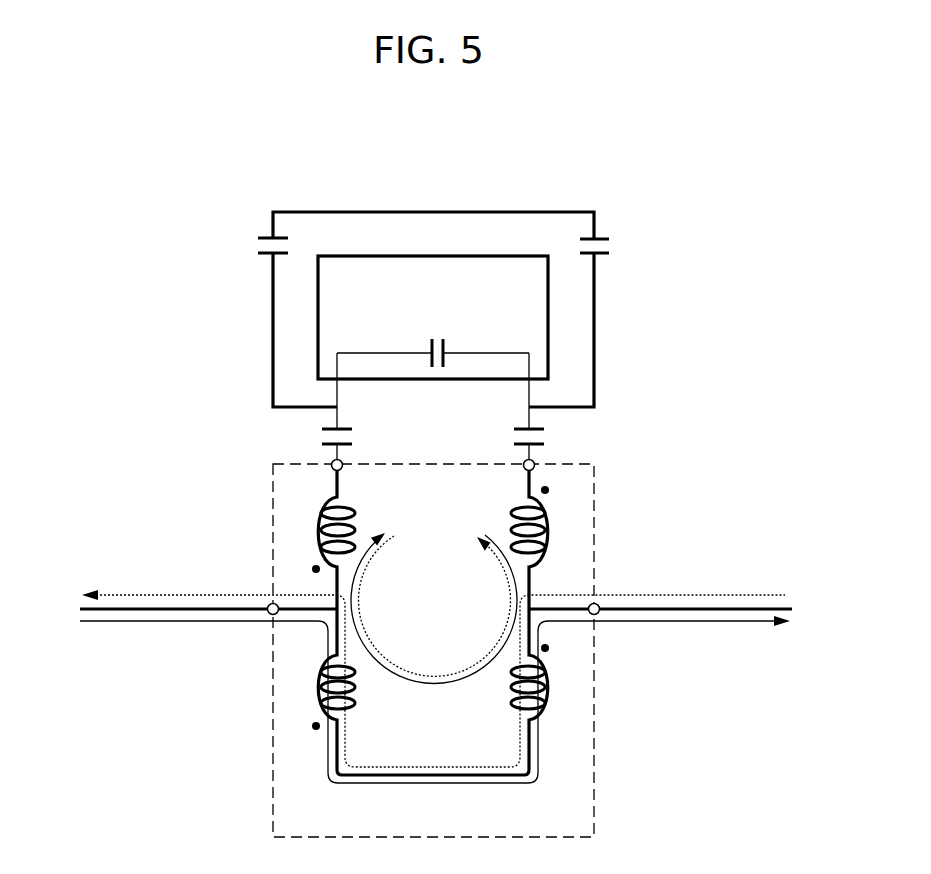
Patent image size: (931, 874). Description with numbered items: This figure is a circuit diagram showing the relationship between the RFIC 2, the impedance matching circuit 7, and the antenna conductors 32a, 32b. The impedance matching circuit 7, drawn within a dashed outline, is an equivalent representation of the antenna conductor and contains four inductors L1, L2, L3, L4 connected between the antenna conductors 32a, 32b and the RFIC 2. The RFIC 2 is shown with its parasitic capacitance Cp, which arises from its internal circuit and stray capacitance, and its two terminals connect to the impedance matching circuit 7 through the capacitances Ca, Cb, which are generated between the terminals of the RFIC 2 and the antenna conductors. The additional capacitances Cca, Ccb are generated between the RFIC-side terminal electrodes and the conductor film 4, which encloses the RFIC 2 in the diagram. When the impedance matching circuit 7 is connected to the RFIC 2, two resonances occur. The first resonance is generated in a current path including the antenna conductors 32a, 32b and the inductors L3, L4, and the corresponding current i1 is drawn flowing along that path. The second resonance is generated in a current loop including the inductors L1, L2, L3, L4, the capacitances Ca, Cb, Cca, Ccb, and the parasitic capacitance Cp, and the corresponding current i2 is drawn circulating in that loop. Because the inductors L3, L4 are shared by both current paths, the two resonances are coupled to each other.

The RFIC 2 is at (437, 256).
The conductor film 4 is at (494, 212).
The impedance matching circuit 7 is at (596, 500).
The antenna conductor 32a is at (172, 607).
The antenna conductor 32b is at (702, 607).
The additional capacitance Cca is at (245, 247).
The additional capacitance Ccb is at (624, 245).
The capacitance Ca is at (317, 406).
The capacitance Cb is at (552, 406).
The parasitic capacitance Cp is at (433, 337).
The inductor L1 is at (546, 539).
The inductor L2 is at (320, 539).
The inductor L3 is at (507, 692).
The inductor L4 is at (358, 692).
The current i1 is at (435, 699).
The current i2 is at (434, 608).